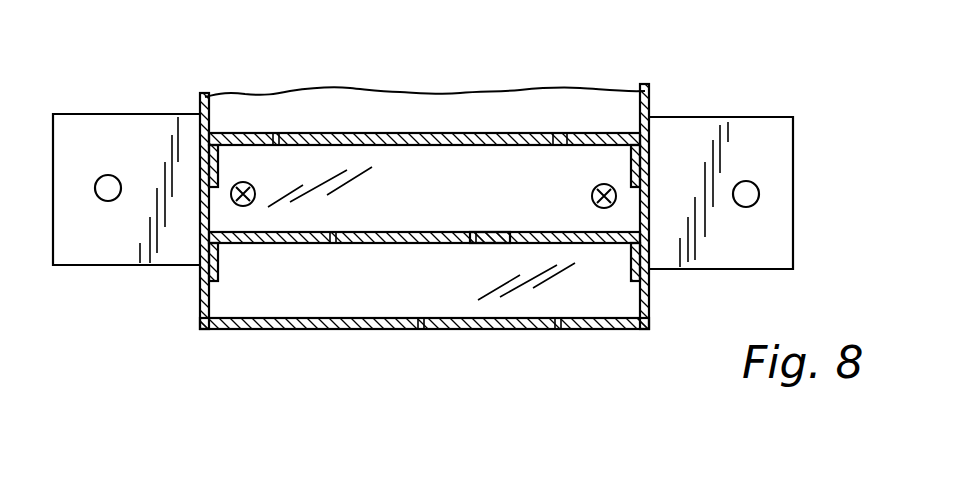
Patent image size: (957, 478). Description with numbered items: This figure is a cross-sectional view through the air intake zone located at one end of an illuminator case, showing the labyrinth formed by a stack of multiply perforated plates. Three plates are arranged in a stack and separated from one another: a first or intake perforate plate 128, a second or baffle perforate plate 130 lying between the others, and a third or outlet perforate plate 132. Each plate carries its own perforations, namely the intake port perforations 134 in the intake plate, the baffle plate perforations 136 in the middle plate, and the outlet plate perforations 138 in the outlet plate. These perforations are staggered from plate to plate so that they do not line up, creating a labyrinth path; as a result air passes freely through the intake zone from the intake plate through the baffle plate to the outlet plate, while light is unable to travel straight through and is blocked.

The intake perforate plate 128 is at (370, 330).
The baffle perforate plate 130 is at (437, 192).
The outlet perforate plate 132 is at (503, 133).
The intake port perforations 134 is at (433, 328).
The baffle plate perforations 136 is at (492, 233).
The outlet plate perforations 138 is at (420, 133).